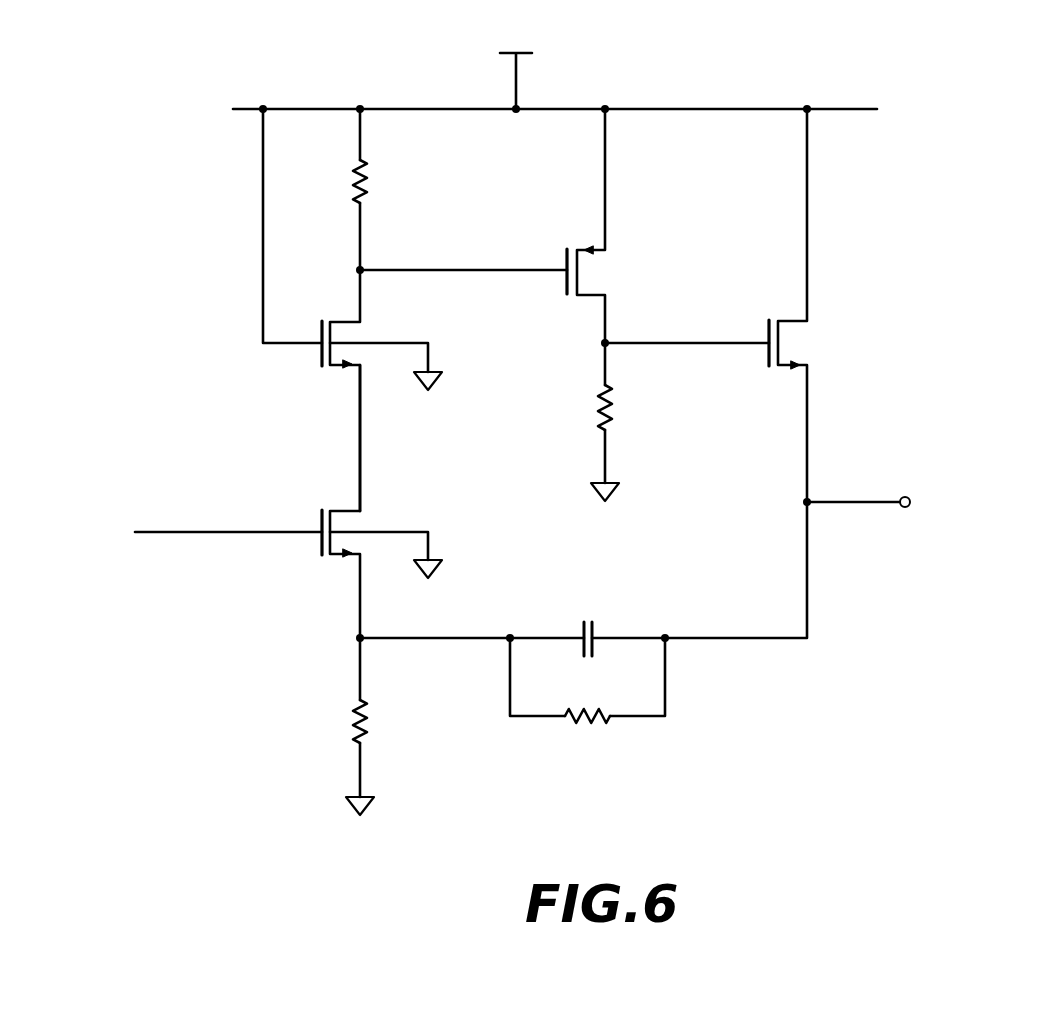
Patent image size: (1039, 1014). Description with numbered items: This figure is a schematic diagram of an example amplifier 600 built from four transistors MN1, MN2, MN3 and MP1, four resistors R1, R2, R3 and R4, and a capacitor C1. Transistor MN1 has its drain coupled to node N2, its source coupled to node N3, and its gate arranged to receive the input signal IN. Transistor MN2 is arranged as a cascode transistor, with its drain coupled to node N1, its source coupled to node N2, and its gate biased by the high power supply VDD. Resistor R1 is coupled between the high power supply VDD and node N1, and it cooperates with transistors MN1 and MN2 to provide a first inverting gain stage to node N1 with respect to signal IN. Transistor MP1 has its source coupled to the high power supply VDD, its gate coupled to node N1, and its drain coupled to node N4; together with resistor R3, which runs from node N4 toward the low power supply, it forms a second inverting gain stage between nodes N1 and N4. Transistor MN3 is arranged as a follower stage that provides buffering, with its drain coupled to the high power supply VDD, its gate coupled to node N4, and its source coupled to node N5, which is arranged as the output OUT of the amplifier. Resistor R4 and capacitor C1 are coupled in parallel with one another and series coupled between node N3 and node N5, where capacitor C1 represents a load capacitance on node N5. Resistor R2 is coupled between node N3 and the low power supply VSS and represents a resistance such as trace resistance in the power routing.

The amplifier 600 is at (940, 760).
The resistor R1 is at (381, 189).
The resistor R2 is at (379, 717).
The resistor R3 is at (619, 422).
The resistor R4 is at (587, 701).
The capacitor C1 is at (587, 621).
The transistor MN1 is at (382, 568).
The transistor MN2 is at (382, 390).
The transistor MN3 is at (820, 305).
The transistor MP1 is at (617, 226).
The node N1 is at (467, 270).
The node N2 is at (363, 449).
The node N3 is at (363, 636).
The node N4 is at (608, 319).
The node N5 is at (810, 578).
The input signal IN is at (211, 531).
The output OUT is at (893, 503).
The high power supply VDD is at (527, 64).
The low power supply VSS is at (370, 827).